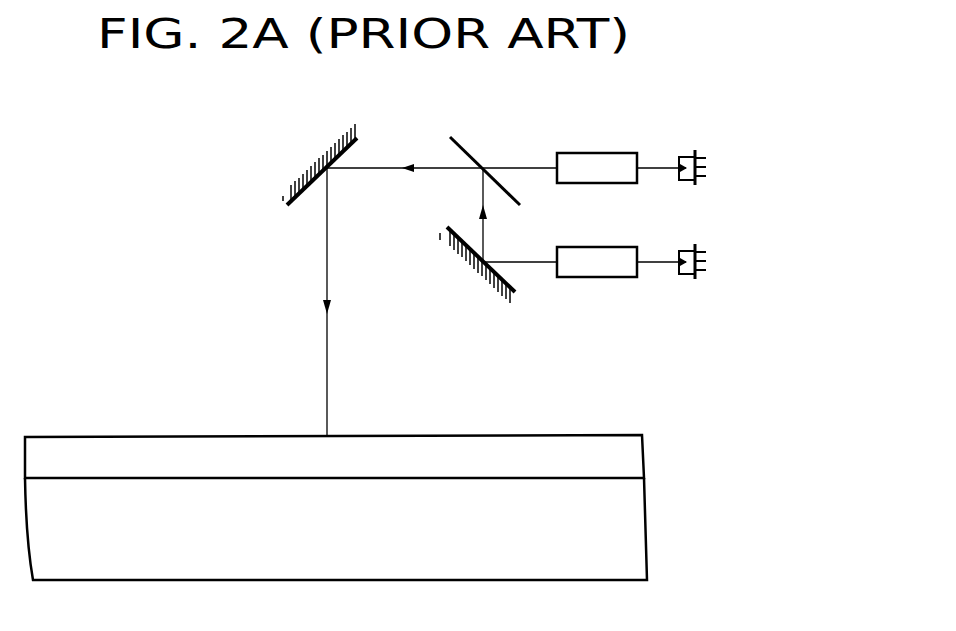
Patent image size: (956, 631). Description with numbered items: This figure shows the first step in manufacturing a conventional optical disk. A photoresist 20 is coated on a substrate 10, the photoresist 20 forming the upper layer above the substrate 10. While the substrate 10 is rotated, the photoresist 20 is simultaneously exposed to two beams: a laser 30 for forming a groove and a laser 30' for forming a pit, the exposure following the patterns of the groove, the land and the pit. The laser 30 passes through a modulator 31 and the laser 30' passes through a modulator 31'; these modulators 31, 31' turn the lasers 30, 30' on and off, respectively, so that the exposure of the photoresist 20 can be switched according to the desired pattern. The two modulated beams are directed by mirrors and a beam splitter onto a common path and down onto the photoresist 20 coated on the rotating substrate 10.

The substrate 10 is at (632, 537).
The photoresist 20 is at (620, 460).
The laser for a groove 30 is at (668, 126).
The laser for a pit 30' is at (672, 309).
The modulator 31 is at (597, 125).
The modulator 31' is at (595, 310).